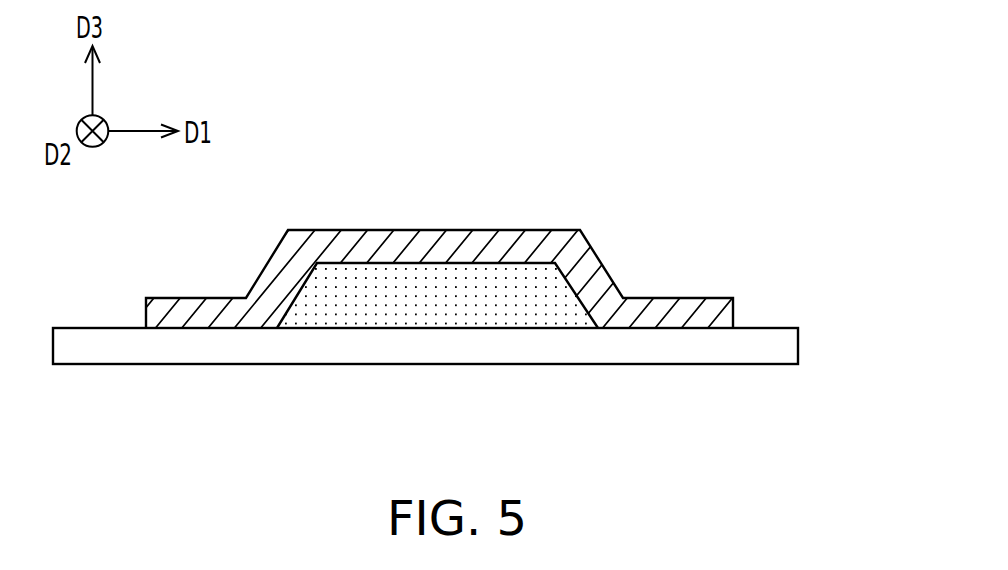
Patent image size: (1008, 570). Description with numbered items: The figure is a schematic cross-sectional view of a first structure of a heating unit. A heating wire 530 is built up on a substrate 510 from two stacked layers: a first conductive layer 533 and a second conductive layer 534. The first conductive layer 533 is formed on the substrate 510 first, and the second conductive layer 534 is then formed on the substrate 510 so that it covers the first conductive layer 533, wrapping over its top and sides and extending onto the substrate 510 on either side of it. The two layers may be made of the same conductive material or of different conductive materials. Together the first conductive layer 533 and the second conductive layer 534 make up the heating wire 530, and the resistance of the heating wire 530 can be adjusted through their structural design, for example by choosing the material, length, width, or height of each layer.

The substrate 510 is at (790, 343).
The heating wire 530 is at (459, 247).
The first conductive layer 533 is at (563, 305).
The second conductive layer 534 is at (580, 232).